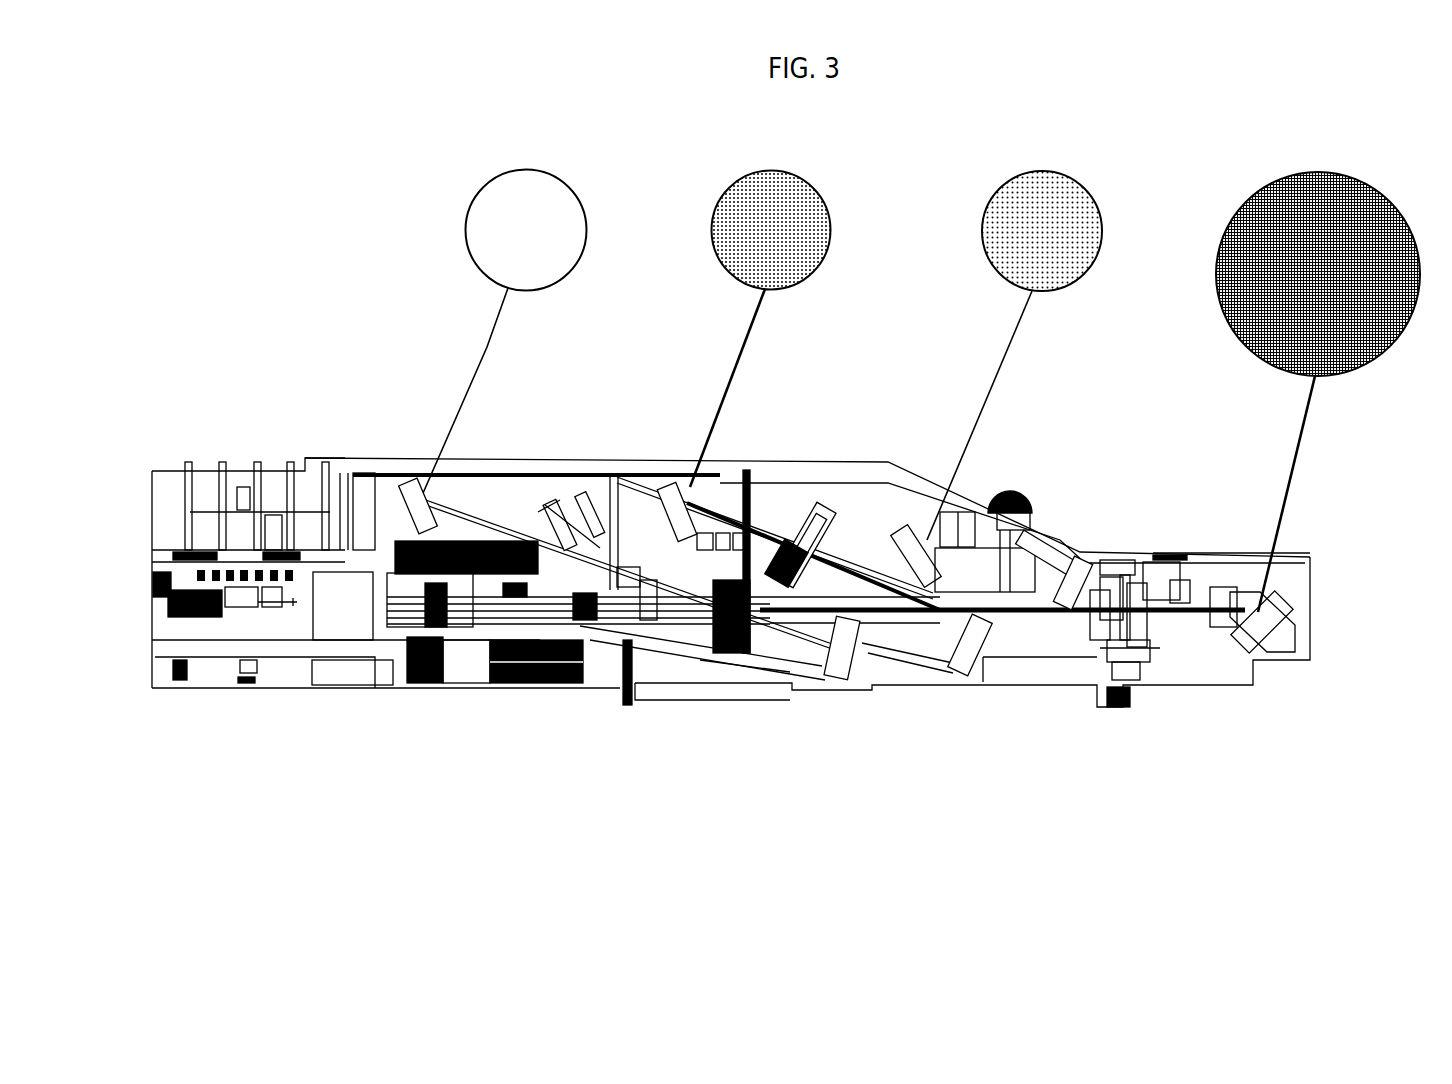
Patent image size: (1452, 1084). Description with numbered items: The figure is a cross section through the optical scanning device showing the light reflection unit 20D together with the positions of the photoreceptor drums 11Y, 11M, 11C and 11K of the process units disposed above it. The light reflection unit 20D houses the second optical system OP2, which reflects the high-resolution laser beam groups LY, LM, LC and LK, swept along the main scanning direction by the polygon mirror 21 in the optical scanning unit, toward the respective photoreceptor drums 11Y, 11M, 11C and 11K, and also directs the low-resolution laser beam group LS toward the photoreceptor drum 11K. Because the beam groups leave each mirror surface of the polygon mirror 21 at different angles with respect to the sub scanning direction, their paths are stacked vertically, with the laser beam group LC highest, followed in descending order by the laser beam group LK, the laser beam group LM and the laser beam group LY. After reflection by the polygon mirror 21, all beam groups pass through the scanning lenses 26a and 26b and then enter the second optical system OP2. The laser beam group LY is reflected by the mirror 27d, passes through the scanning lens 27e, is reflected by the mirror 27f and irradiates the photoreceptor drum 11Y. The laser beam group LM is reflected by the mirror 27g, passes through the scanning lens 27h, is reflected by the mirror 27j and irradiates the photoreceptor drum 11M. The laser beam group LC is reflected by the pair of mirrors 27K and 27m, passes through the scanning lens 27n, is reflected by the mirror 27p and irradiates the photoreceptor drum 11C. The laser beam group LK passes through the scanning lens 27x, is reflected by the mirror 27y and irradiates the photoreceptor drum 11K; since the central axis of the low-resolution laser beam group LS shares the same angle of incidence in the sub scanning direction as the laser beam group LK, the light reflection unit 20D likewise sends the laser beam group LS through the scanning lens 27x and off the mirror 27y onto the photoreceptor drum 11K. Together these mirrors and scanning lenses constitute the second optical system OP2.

The photoreceptor drum 11Y is at (553, 172).
The photoreceptor drum 11M is at (797, 172).
The photoreceptor drum 11C is at (1069, 173).
The photoreceptor drum 11K is at (1355, 175).
The laser beam group LY is at (486, 345).
The laser beam group LM is at (743, 347).
The laser beam group LC is at (1008, 347).
The laser beam group LK is at (1294, 462).
The low-resolution laser beam group LS is at (1330, 494).
The light reflection unit 20D is at (1042, 727).
The polygon mirror 21 is at (275, 607).
The scanning lens 26a is at (402, 623).
The scanning lens 26b is at (518, 623).
The second optical system OP2 is at (758, 702).
The mirror 27f is at (415, 495).
The scanning lens 27e is at (565, 515).
The mirror 27j is at (676, 492).
The scanning lens 27h is at (812, 513).
The mirror 27p is at (907, 528).
The scanning lens 27n is at (985, 518).
The mirror 27m is at (1050, 547).
The mirror 27K is at (1083, 573).
The mirror 27d is at (837, 663).
The mirror 27g is at (960, 663).
The scanning lens 27x is at (1130, 647).
The mirror 27y is at (1243, 643).